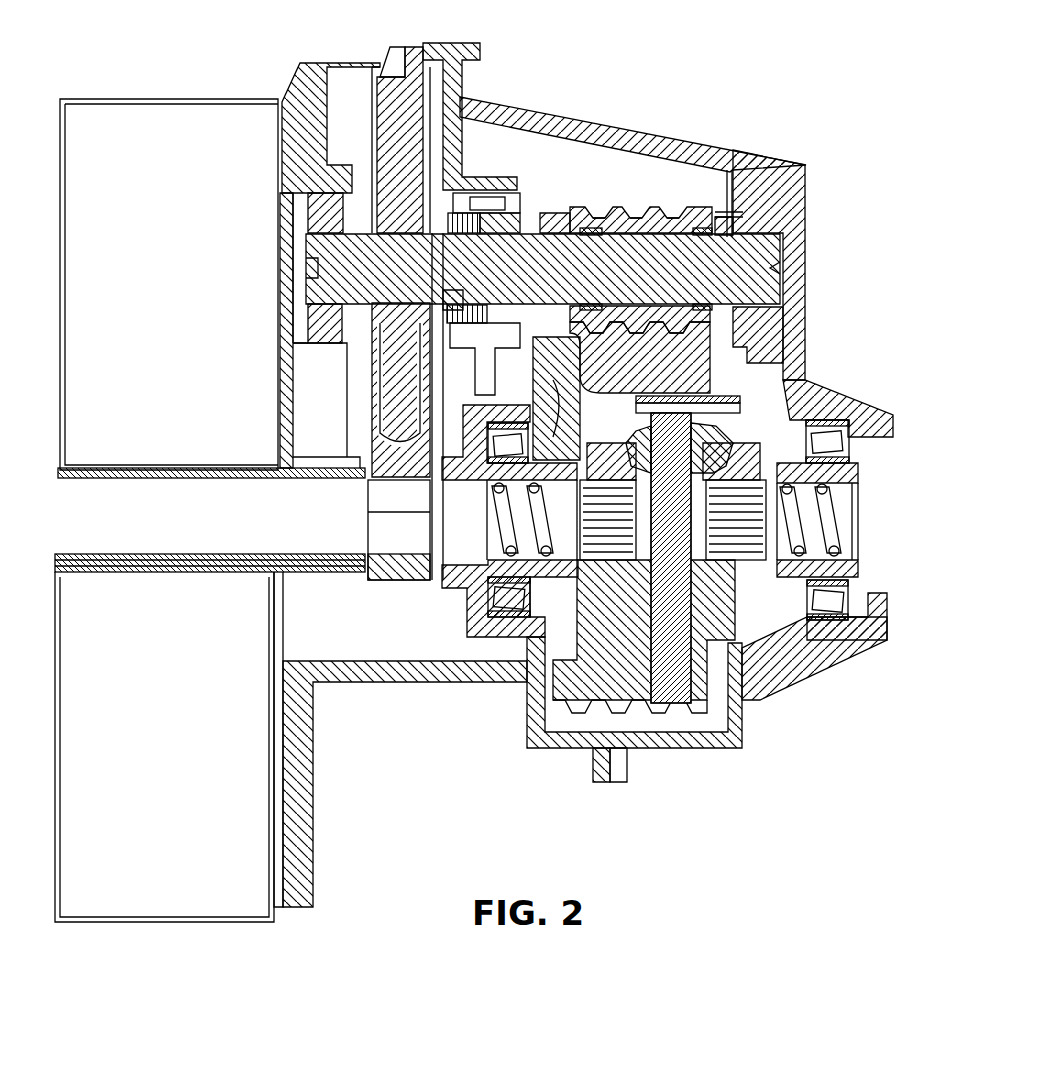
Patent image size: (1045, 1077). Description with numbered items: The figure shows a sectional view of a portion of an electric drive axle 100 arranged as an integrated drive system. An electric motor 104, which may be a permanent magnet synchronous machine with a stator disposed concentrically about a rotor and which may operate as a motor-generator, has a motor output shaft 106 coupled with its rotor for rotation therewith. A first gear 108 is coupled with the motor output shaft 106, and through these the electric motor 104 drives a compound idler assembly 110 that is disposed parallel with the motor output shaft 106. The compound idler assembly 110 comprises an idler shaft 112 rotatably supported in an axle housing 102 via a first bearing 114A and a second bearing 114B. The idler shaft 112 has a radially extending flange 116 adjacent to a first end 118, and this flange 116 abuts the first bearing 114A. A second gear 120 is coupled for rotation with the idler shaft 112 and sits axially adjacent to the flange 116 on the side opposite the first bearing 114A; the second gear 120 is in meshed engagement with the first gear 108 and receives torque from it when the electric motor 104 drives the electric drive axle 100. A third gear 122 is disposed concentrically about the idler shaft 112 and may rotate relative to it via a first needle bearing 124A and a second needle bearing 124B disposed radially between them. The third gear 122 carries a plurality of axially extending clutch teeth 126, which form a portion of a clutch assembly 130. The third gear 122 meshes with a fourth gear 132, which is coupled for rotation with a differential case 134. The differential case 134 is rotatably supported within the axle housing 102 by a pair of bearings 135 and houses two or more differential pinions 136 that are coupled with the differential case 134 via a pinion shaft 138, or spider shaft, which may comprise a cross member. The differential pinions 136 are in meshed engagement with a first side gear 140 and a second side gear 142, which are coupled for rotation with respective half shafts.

The electric drive axle 100 is at (722, 40).
The axle housing 102 is at (300, 88).
The electric motor 104 is at (98, 115).
The motor output shaft 106 is at (133, 566).
The first gear 108 is at (382, 565).
The compound idler assembly 110 is at (478, 115).
The idler shaft 112 is at (718, 225).
The first bearing 114A is at (320, 212).
The second bearing 114B is at (765, 205).
The flange 116 is at (362, 330).
The first end 118 is at (320, 248).
The second gear 120 is at (390, 80).
The third gear 122 is at (653, 210).
The first needle bearing 124A is at (595, 205).
The second needle bearing 124B is at (735, 300).
The clutch teeth 126 is at (548, 215).
The clutch assembly 130 is at (520, 150).
The fourth gear 132 is at (707, 345).
The differential case 134 is at (580, 655).
The bearings 135 is at (830, 448).
The differential pinions 136 is at (745, 418).
The pinion shaft 138 is at (680, 660).
The first side gear 140 is at (538, 650).
The second side gear 142 is at (765, 585).